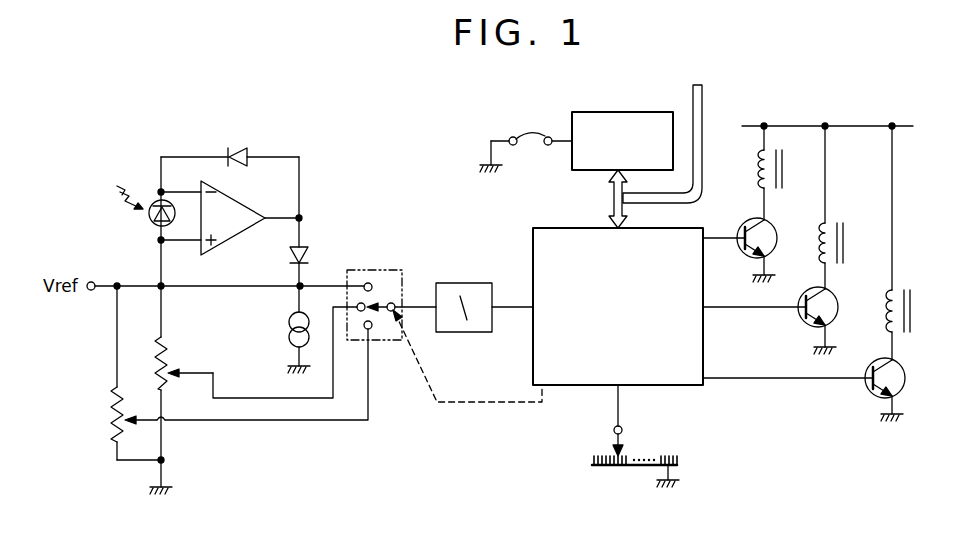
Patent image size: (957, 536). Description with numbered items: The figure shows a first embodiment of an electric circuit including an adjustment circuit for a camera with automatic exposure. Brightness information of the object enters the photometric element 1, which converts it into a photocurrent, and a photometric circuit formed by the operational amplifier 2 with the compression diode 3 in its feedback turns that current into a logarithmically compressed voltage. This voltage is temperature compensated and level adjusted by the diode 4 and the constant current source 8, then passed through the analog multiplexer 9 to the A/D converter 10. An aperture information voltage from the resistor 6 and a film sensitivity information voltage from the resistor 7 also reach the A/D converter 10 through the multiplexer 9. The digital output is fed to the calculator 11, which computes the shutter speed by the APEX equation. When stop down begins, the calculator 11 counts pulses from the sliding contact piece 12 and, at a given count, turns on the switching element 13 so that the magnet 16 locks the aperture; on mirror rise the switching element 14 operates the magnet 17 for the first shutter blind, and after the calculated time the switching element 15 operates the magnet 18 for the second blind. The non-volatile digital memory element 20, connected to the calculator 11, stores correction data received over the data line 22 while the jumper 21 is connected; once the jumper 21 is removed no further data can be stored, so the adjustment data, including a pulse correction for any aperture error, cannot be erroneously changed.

The photometric element 1 is at (150, 216).
The operational amplifier 2 is at (238, 214).
The compression diode 3 is at (232, 151).
The diode for compensating temperature 4 is at (291, 253).
The resistor for inputting aperture information 6 is at (166, 356).
The resistor 7 is at (113, 421).
The constant current source 8 is at (292, 323).
The analog multiplexer 9 is at (370, 270).
The A/D converter 10 is at (459, 283).
The calculator 11 is at (540, 237).
The sliding contact piece 12 is at (623, 430).
The switching element 13 is at (757, 221).
The switching element 14 is at (834, 307).
The switching element 15 is at (898, 381).
The magnet for locking an aperture 16 is at (784, 181).
The magnet for running a first shutter blind 17 is at (845, 243).
The magnet for running a second shutter blind 18 is at (910, 324).
The non-volatile digital memory element 20 is at (633, 112).
The jumper 21 is at (527, 132).
The data line 22 is at (702, 111).